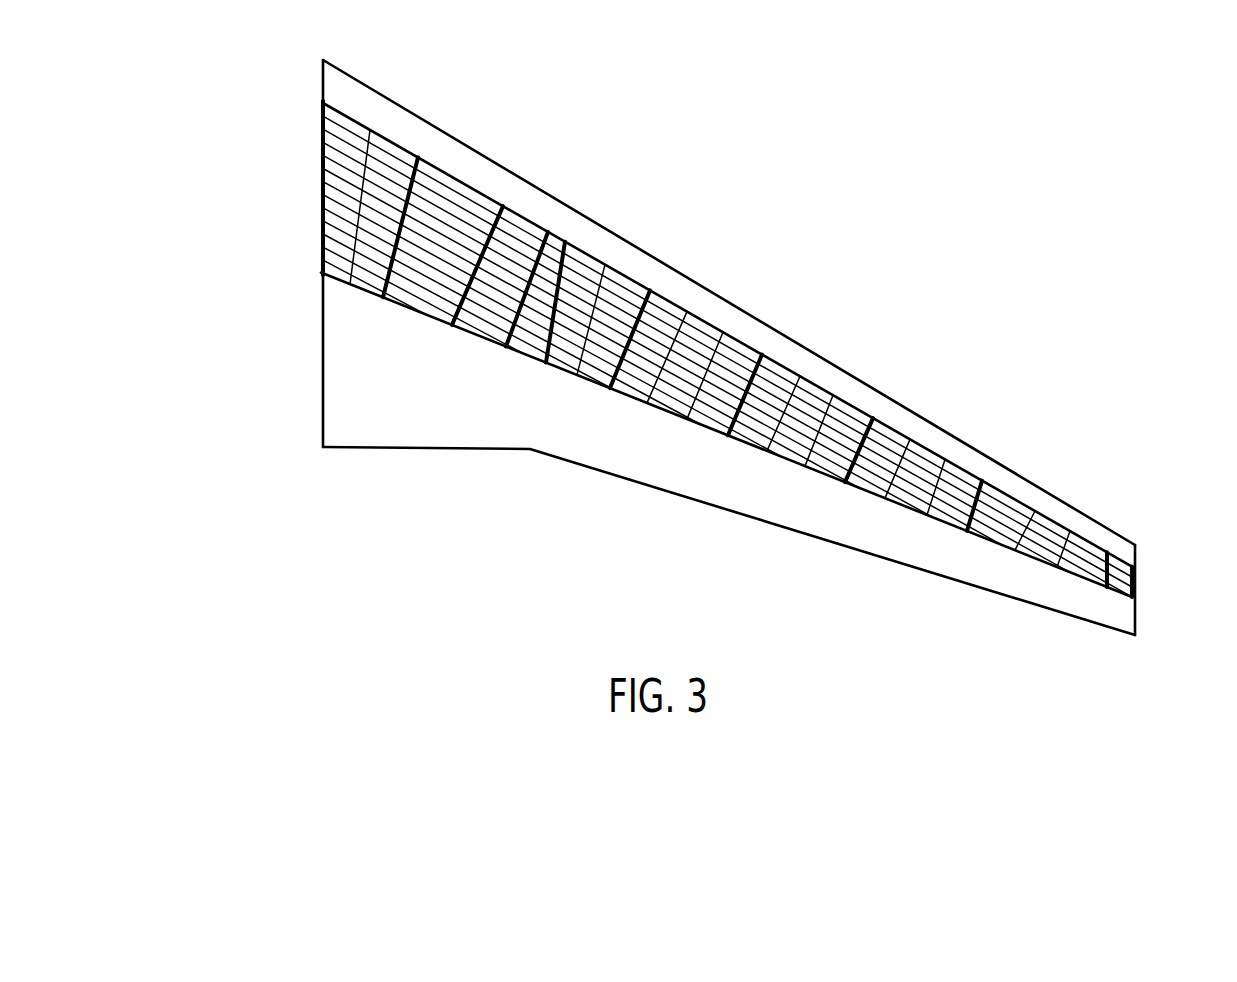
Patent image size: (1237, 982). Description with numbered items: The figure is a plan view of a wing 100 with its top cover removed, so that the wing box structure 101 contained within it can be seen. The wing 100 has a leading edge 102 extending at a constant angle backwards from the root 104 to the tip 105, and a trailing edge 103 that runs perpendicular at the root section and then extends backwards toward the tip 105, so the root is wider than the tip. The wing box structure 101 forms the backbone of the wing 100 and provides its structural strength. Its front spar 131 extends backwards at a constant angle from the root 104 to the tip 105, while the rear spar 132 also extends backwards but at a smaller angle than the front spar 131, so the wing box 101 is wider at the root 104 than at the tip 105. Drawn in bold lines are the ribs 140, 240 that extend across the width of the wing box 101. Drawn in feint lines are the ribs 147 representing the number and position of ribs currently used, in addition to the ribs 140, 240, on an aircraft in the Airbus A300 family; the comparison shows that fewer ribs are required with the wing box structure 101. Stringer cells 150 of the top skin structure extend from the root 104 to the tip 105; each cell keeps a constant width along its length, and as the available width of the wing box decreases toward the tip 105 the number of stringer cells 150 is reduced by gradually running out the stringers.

The wing 100 is at (711, 347).
The wing box structure 101 is at (290, 166).
The leading edge 102 is at (718, 296).
The trailing edge 103 is at (687, 498).
The root 104 is at (321, 358).
The tip 105 is at (1137, 613).
The front spar 131 is at (787, 369).
The rear spar 132 is at (640, 400).
The rib 140 is at (744, 377).
The rib 240 is at (465, 293).
The ribs 147 is at (602, 268).
The stringer cells 150 is at (850, 430).